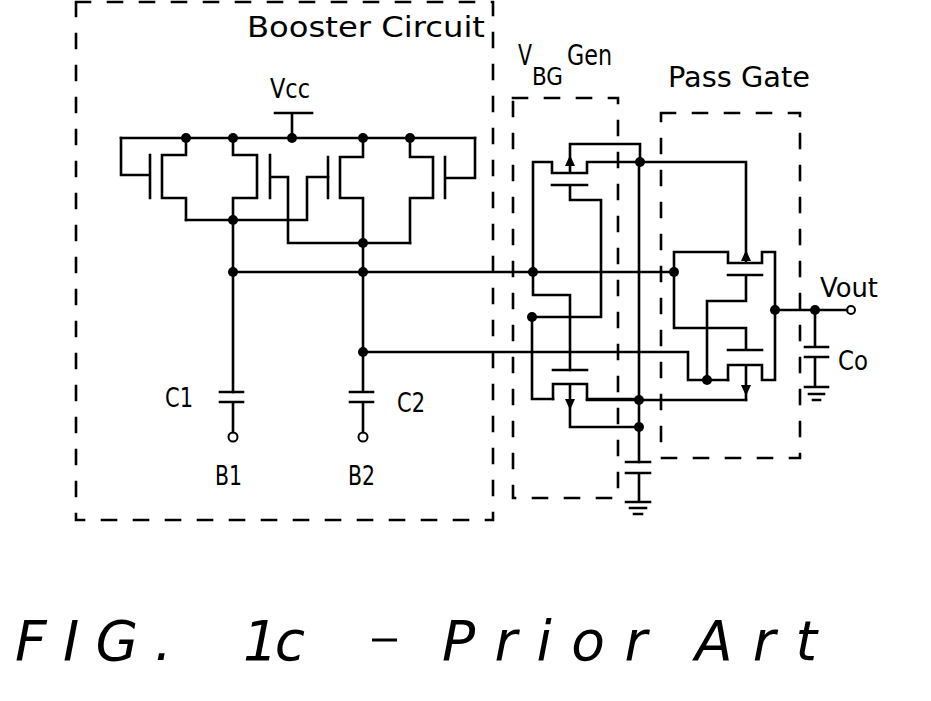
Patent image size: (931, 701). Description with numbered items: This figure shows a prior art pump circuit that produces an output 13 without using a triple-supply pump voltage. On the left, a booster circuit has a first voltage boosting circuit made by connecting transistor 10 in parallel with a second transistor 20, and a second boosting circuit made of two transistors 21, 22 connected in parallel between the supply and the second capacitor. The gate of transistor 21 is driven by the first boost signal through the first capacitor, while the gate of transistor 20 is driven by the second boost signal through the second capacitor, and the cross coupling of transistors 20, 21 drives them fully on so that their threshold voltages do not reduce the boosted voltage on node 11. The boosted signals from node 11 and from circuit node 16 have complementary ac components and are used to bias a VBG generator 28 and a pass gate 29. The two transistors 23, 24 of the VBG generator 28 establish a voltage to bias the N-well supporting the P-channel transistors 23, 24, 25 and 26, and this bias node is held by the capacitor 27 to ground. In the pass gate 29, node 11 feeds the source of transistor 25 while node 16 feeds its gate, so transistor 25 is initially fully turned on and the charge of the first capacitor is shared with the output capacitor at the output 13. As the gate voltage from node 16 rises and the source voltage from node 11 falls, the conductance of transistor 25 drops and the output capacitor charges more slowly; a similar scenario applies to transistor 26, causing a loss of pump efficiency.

The transistor 10 is at (162, 199).
The second transistor 20 is at (243, 155).
The node 11 is at (236, 274).
The circuit node 16 is at (362, 352).
The transistor 21 is at (355, 158).
The transistor 22 is at (422, 200).
The transistor 23 is at (569, 156).
The transistor 24 is at (553, 401).
The pass gate transistor 25 is at (750, 255).
The transistor 26 is at (762, 382).
The VBG capacitor 27 is at (645, 474).
The VBG generator 28 is at (565, 499).
The pass gate 29 is at (710, 459).
The output 13 is at (855, 313).